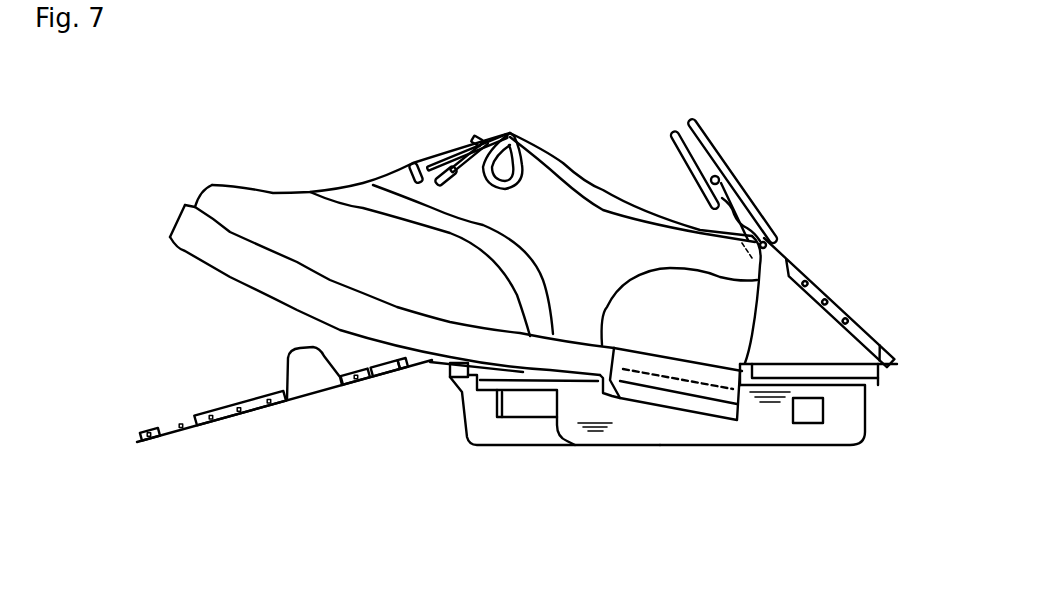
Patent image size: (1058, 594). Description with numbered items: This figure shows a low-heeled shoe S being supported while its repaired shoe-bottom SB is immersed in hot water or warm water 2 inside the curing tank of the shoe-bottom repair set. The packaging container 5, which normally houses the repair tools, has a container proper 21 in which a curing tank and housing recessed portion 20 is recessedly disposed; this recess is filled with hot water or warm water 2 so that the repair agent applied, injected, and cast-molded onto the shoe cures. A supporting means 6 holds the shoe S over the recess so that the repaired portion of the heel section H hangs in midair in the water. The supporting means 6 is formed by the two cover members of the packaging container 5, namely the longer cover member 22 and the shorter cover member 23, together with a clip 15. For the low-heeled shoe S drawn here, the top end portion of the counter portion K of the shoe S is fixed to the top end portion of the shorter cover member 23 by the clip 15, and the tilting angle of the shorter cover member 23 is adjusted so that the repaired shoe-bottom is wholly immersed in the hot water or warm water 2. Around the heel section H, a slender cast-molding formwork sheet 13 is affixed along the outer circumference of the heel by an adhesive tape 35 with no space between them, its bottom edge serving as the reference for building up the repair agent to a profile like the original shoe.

The shoe S is at (338, 168).
The shoe-bottom SB is at (227, 273).
The counter portion K is at (750, 298).
The packaging container 5 is at (532, 328).
The hot water or warm water 2 is at (647, 463).
The curing tank and housing recessed portion 20 is at (577, 446).
The container proper 21 is at (813, 450).
The longer cover member 22 is at (252, 410).
The shorter cover member 23 is at (843, 306).
The supporting means 6 is at (799, 239).
The clip 15 is at (710, 148).
The formwork sheet 13 is at (713, 407).
The adhesive tape 35 is at (638, 360).
The heel section H is at (736, 410).